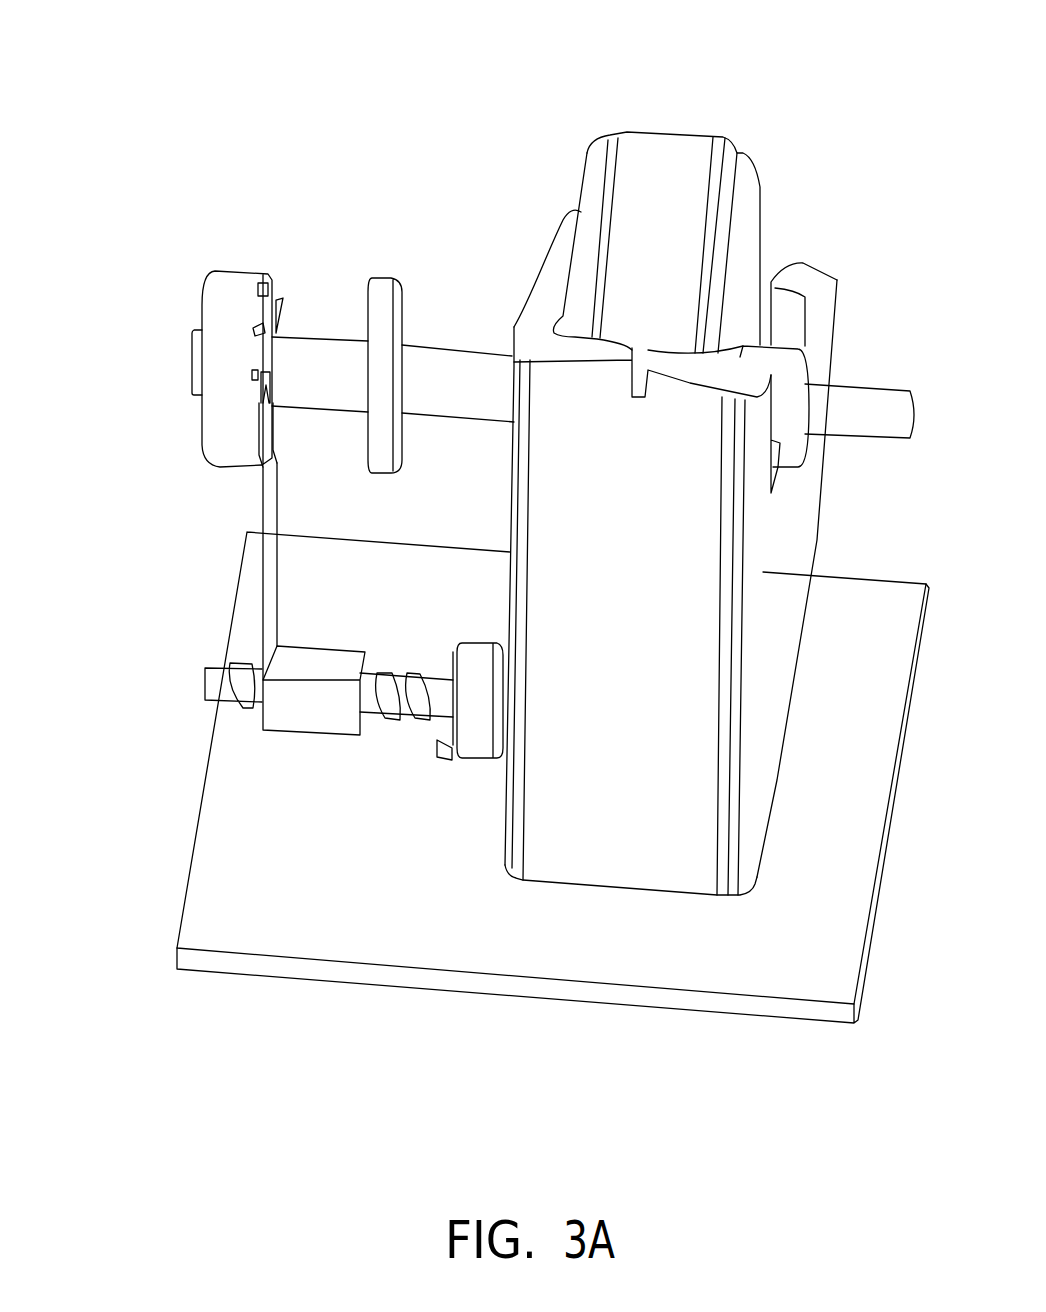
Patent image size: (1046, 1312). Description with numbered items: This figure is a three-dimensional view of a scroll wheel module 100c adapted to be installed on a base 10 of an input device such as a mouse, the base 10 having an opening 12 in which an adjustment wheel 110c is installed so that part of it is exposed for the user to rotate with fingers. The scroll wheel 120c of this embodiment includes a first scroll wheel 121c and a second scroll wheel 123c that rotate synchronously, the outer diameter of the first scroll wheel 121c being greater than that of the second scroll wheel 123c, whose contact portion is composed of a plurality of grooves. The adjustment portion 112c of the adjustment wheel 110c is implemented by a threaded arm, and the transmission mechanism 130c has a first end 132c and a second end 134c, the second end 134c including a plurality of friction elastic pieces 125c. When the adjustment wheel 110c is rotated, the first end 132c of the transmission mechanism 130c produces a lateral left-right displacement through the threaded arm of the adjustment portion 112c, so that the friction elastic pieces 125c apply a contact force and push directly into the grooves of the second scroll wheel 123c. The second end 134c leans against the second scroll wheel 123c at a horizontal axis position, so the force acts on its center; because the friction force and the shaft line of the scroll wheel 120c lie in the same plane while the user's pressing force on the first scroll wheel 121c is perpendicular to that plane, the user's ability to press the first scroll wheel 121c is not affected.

The base 10 is at (795, 972).
The opening 12 is at (447, 748).
The scroll wheel module 100c is at (937, 1178).
The adjustment wheel 110c is at (465, 727).
The adjustment portion 112c is at (388, 690).
The scroll wheel 120c is at (575, 68).
The first scroll wheel 121c is at (660, 153).
The second scroll wheel 123c is at (237, 277).
The friction elastic pieces 125c is at (262, 325).
The transmission mechanism 130c is at (259, 449).
The first end 132c is at (297, 697).
The second end 134c is at (275, 440).